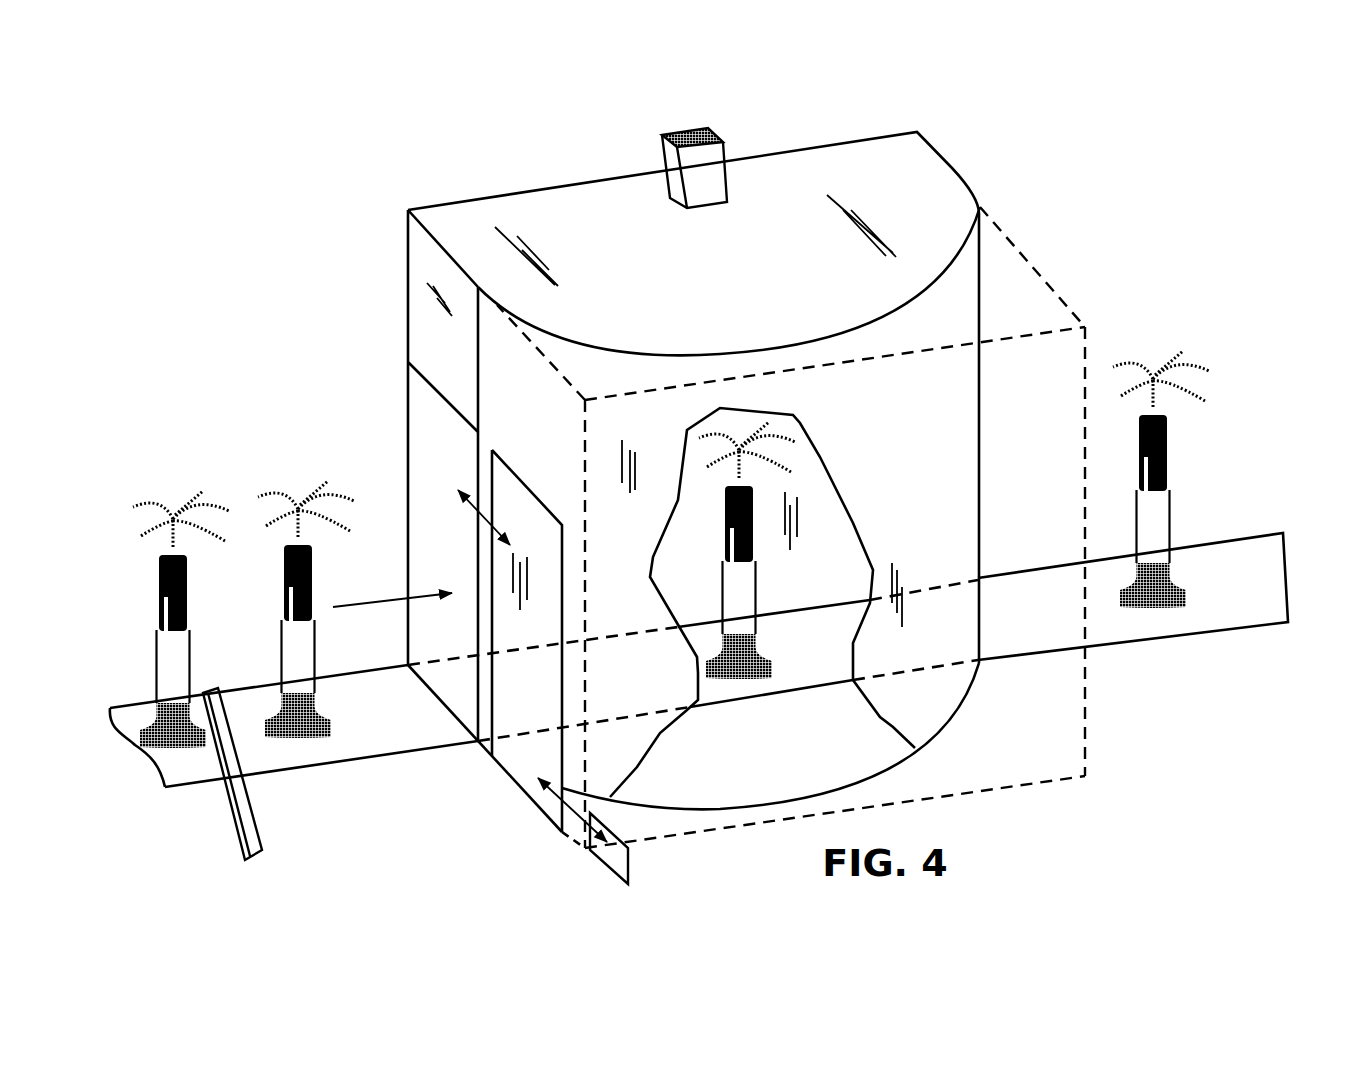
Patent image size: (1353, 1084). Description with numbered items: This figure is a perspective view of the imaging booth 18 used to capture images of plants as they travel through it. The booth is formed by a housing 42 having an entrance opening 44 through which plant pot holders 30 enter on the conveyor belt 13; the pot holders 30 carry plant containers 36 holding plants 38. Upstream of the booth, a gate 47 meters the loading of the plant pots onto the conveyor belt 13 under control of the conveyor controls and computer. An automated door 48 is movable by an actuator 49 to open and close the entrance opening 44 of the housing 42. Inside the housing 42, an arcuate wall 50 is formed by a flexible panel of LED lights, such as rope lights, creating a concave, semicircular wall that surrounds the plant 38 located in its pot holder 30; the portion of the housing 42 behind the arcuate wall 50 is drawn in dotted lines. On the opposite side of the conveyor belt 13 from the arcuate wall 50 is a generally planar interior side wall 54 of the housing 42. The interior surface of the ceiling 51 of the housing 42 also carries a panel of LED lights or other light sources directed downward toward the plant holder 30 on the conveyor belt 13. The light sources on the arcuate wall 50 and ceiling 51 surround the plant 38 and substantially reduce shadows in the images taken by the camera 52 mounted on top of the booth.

The conveyor belt 13 is at (407, 713).
The imaging booth 18 is at (1035, 260).
The plant pot holder 30 is at (302, 740).
The plant container 36 is at (1140, 440).
The plant 38 is at (757, 448).
The housing 42 is at (398, 250).
The entrance opening 44 is at (437, 468).
The gate 47 is at (258, 830).
The automated door 48 is at (508, 515).
The actuator 49 is at (622, 857).
The arcuate wall 50 is at (897, 390).
The ceiling 51 is at (708, 287).
The camera 52 is at (705, 178).
The interior side wall 54 is at (818, 585).